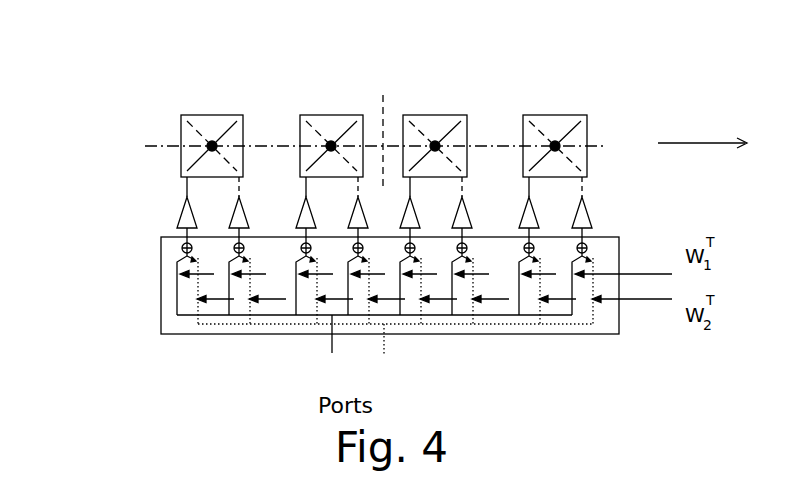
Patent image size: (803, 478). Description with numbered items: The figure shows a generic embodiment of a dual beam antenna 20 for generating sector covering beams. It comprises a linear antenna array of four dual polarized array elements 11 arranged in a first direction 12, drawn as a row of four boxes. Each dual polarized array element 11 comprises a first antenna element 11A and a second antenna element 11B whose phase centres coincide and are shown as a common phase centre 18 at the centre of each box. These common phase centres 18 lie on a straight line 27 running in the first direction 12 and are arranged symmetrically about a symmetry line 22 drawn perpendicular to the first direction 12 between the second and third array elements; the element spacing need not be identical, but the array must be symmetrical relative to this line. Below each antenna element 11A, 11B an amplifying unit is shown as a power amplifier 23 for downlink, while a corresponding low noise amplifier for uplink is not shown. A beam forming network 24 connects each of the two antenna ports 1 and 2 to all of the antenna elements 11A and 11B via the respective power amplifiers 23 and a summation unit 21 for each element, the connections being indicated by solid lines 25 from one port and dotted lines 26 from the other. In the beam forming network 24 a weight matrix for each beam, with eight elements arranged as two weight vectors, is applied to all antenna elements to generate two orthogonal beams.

The dual beam antenna 20 is at (113, 61).
The dual polarized array element 11 is at (200, 115).
The first antenna element 11A is at (183, 163).
The second antenna element 11B is at (190, 137).
The common phase centre 18 is at (331, 146).
The symmetry line 22 is at (383, 97).
The straight line 27 is at (600, 143).
The first direction 12 is at (702, 132).
The power amplifier 23 is at (177, 212).
The summation unit 21 is at (182, 246).
The beam forming network 24 is at (161, 288).
The solid lines 25 is at (177, 308).
The dotted lines 26 is at (233, 325).
The antenna port 1 is at (329, 351).
The antenna port 2 is at (381, 355).